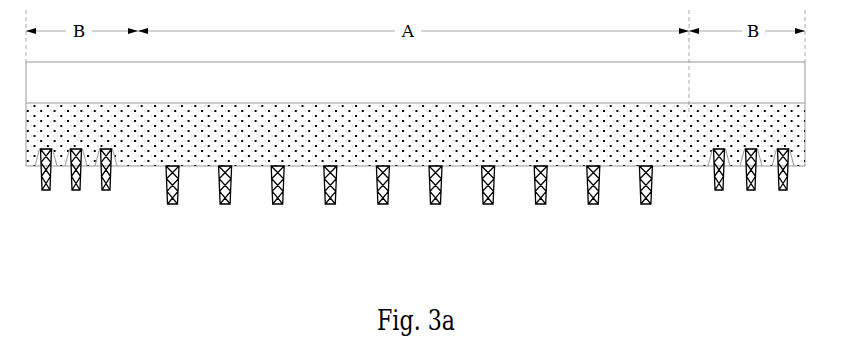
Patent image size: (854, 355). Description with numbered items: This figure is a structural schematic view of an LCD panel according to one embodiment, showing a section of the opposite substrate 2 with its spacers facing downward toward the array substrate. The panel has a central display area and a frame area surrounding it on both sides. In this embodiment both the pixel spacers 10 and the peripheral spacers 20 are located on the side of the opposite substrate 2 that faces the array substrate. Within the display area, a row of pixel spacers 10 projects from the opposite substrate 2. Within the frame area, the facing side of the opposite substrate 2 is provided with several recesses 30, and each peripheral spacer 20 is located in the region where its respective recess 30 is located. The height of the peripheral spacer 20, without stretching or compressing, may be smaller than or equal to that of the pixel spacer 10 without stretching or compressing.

The opposite substrate 2 is at (528, 137).
The pixel spacer 10 is at (387, 197).
The peripheral spacer 20 is at (108, 186).
The recess 30 is at (100, 161).